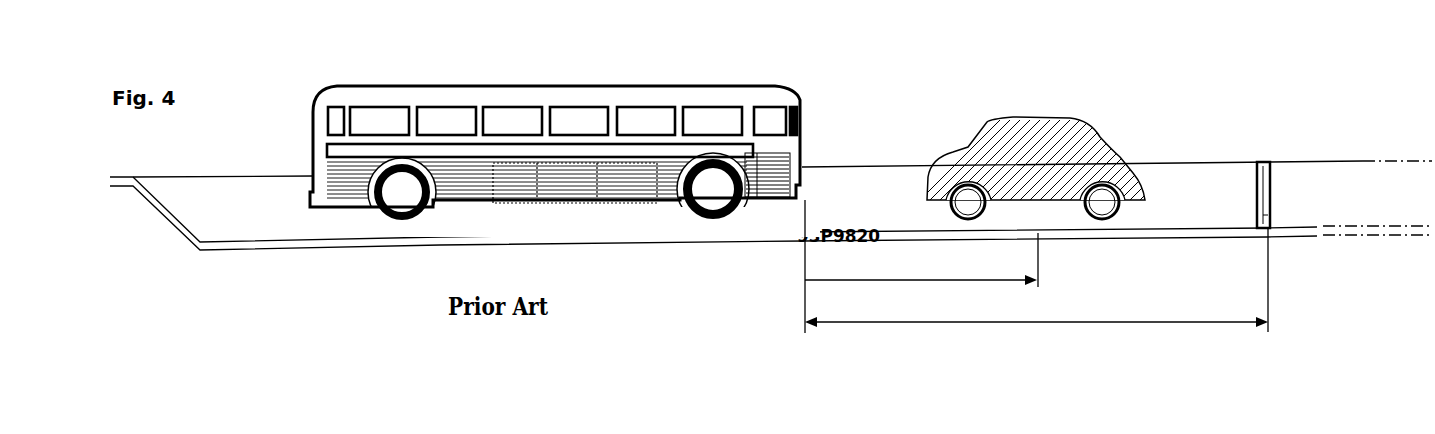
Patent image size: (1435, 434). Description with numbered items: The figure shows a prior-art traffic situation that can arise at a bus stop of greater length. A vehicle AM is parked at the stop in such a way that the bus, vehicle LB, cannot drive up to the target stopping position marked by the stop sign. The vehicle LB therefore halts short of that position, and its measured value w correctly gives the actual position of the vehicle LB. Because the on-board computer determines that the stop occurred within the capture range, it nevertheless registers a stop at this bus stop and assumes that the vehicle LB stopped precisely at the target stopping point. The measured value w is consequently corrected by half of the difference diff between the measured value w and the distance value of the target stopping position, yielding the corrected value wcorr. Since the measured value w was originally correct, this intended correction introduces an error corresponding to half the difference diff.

The vehicle LB is at (780, 90).
The vehicle AM is at (1055, 118).
The measured value w is at (793, 266).
The corrected measured value wcorr is at (1065, 261).
The difference diff is at (1036, 293).